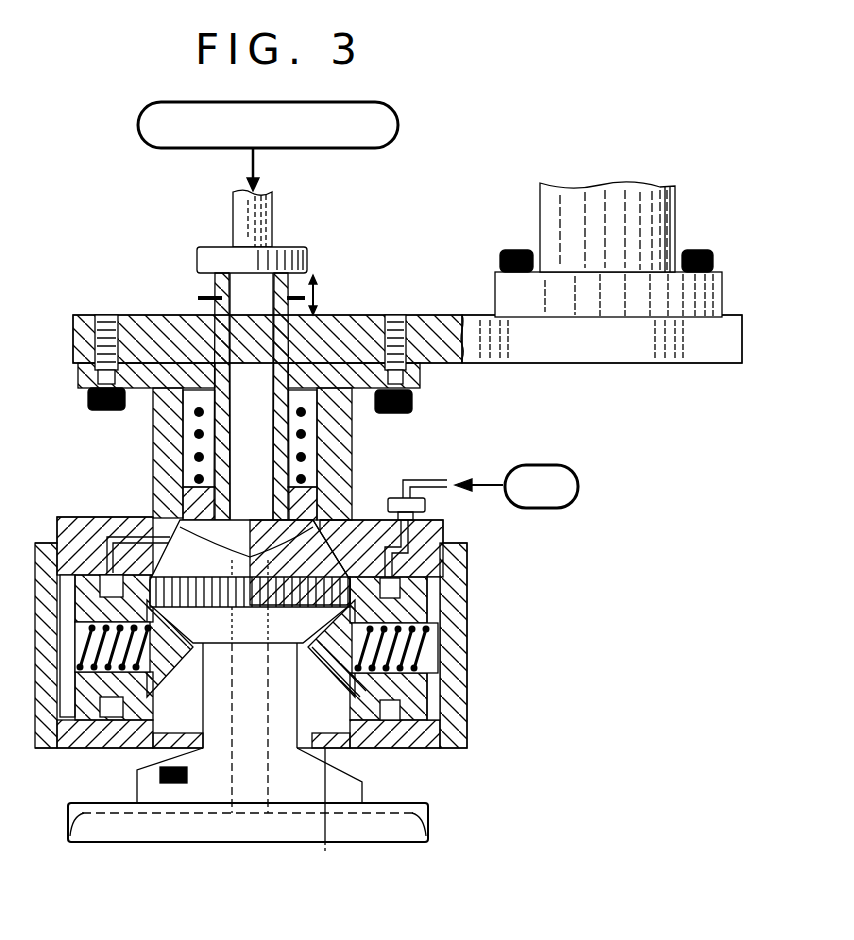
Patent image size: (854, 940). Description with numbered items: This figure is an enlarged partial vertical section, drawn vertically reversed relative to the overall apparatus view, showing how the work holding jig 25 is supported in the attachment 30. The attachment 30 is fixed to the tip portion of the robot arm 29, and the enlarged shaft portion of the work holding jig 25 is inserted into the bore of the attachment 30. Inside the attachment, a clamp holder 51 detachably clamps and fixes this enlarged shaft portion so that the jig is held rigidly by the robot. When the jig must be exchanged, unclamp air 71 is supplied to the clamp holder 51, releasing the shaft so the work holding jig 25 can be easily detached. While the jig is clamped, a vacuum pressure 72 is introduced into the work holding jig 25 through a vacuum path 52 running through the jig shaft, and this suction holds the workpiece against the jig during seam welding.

The vacuum pressure 72 is at (375, 148).
The robot arm 29 is at (675, 223).
The vacuum path 52 is at (247, 350).
The unclamp air 71 is at (553, 464).
The attachment 30 is at (468, 606).
The clamp holder 51 is at (329, 676).
The work holding jig 25 is at (348, 784).